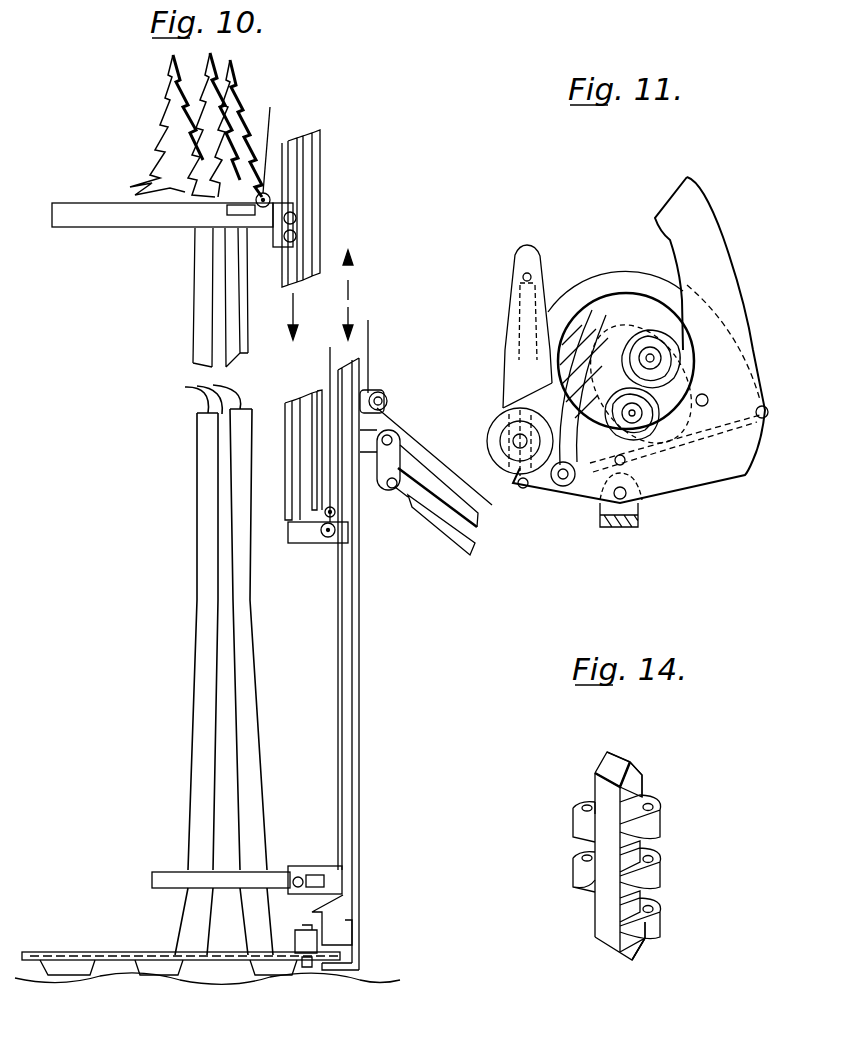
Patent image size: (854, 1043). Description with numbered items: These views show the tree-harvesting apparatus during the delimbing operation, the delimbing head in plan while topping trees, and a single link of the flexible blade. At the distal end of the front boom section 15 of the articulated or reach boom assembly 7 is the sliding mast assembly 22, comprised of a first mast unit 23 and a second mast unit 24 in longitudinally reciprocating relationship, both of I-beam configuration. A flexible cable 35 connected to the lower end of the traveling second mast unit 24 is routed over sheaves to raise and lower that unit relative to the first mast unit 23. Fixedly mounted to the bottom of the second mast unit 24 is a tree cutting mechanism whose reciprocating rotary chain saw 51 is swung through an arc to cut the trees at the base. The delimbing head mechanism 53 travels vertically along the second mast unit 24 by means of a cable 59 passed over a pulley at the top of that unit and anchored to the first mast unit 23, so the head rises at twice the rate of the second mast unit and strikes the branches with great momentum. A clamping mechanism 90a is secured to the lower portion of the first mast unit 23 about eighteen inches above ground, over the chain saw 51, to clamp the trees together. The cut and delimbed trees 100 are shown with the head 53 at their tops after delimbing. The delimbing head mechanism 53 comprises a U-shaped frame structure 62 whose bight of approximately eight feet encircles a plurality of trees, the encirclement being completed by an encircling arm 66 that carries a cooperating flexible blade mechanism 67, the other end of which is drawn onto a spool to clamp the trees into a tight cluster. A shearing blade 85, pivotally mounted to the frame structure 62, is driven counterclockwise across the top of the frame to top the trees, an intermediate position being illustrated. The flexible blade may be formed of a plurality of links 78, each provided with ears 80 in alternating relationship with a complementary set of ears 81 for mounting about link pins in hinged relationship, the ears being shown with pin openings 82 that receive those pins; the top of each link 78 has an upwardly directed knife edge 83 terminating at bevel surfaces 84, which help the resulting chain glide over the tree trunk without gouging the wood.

In FIG. 10, the articulated or reach boom assembly 7 is at (481, 516).
In FIG. 10, the front boom section 15 is at (408, 447).
In FIG. 10, the sliding mast assembly 22 is at (325, 550).
In FIG. 10, the first mast unit 23 is at (348, 582).
In FIG. 10, the second mast unit 24 is at (310, 153).
In FIG. 10, the flexible cable 35 is at (373, 362).
In FIG. 10, the reciprocating rotary chain saw 51 is at (124, 952).
In FIG. 11, the delimbing head mechanism 53 is at (700, 491).
In FIG. 10, the cable 59 is at (273, 117).
In FIG. 11, the U-shaped frame structure 62 is at (722, 484).
In FIG. 11, the encircling arm 66 is at (615, 268).
In FIG. 11, the flexible blade mechanism 67 is at (647, 330).
In FIG. 11, the shearing blade 85 is at (588, 494).
In FIG. 10, the clamping mechanism 90a is at (165, 870).
In FIG. 10, the delimbed trees 100 is at (197, 388).
In FIG. 14, the link 78 is at (616, 828).
In FIG. 14, the ears 80 is at (663, 914).
In FIG. 14, the complementary set of ears 81 is at (566, 872).
In FIG. 14, the pin hole lugs 82 is at (584, 804).
In FIG. 14, the upwardly directed knife edge 83 is at (618, 758).
In FIG. 14, the bevel surfaces 84 is at (642, 775).